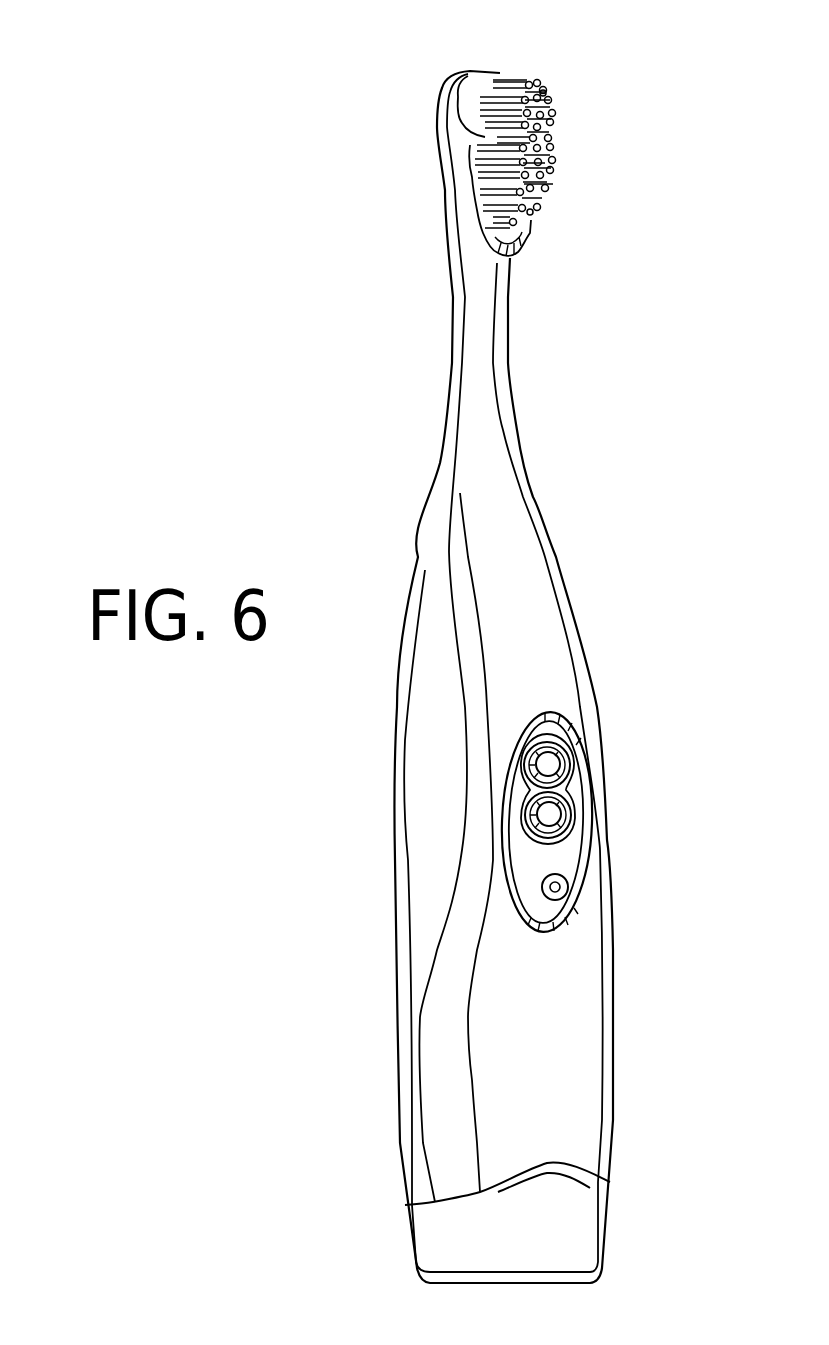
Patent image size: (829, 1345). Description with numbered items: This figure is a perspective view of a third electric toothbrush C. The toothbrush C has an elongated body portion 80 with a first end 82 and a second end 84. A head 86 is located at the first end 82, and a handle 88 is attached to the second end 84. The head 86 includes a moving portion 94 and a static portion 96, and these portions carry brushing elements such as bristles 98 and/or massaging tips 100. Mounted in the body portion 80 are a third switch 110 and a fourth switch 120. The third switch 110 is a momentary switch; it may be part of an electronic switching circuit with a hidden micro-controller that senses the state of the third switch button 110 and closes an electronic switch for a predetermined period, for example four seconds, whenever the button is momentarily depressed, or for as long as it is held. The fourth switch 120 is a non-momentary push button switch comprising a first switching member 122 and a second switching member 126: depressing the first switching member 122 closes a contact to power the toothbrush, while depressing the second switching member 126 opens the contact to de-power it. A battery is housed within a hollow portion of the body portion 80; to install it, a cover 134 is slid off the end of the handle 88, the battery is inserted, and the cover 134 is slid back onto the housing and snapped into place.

The body portion 80 is at (597, 700).
The first end 82 is at (507, 357).
The second end 84 is at (615, 1097).
The head 86 is at (435, 117).
The handle 88 is at (613, 947).
The moving portion 94 is at (552, 115).
The static portion 96 is at (556, 183).
The bristles 98 is at (528, 82).
The massaging tips 100 is at (552, 100).
The third switch 110 is at (562, 885).
The fourth switch 120 is at (567, 787).
The first switching member 122 is at (545, 770).
The second switching member 126 is at (548, 816).
The cover 134 is at (550, 1235).
The third toothbrush C is at (633, 320).